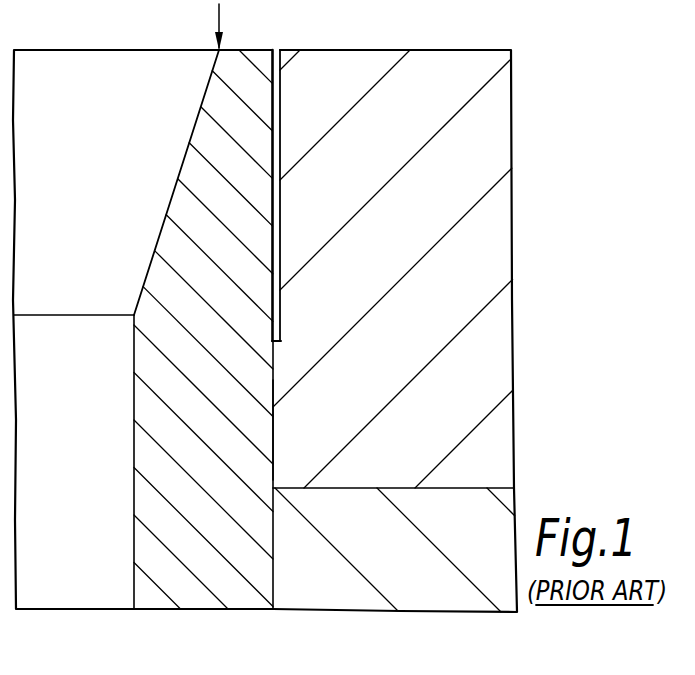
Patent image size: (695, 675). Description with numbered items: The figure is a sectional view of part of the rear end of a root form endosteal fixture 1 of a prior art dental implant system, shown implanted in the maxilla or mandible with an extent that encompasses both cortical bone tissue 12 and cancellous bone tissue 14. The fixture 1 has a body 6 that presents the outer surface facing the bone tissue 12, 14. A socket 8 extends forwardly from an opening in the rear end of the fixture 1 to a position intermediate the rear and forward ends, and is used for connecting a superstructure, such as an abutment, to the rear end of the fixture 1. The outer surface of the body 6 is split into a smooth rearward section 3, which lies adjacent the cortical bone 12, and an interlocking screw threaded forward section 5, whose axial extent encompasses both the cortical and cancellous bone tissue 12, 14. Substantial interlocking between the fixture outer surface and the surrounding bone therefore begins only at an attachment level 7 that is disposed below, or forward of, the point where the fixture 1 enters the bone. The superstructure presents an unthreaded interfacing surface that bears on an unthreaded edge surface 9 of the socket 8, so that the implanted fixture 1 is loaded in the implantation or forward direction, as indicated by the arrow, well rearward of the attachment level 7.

The root form endosteal fixture 1 is at (113, 36).
The smooth rearward section 3 is at (277, 118).
The interlocking screw threaded forward section 5 is at (282, 424).
The body 6 is at (178, 586).
The attachment level 7 is at (270, 341).
The socket 8 is at (72, 264).
The unthreaded edge surface 9 is at (218, 49).
The cortical bone tissue 12 is at (487, 243).
The cancellous bone tissue 14 is at (450, 584).